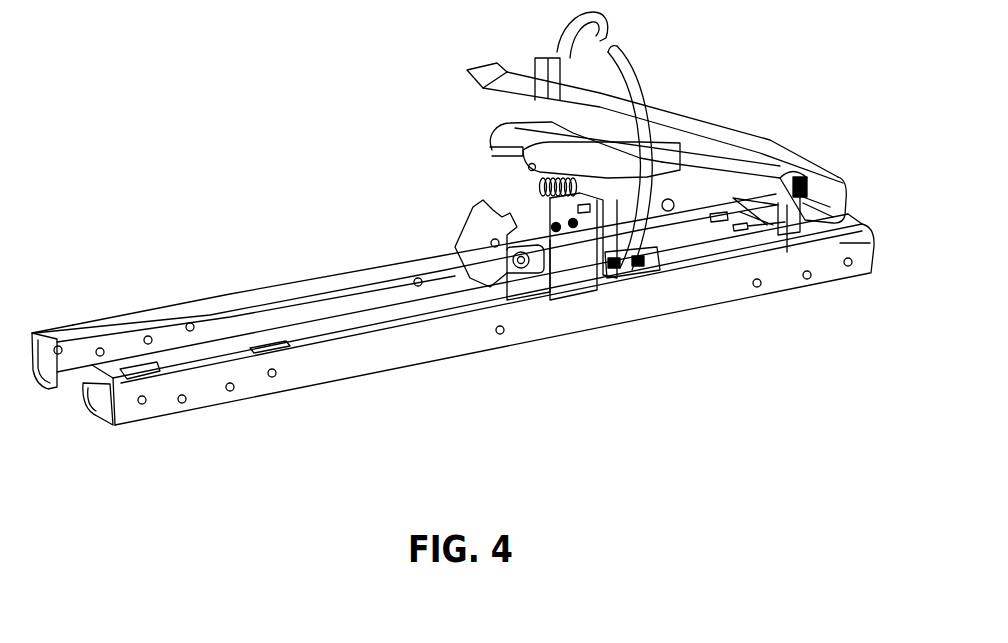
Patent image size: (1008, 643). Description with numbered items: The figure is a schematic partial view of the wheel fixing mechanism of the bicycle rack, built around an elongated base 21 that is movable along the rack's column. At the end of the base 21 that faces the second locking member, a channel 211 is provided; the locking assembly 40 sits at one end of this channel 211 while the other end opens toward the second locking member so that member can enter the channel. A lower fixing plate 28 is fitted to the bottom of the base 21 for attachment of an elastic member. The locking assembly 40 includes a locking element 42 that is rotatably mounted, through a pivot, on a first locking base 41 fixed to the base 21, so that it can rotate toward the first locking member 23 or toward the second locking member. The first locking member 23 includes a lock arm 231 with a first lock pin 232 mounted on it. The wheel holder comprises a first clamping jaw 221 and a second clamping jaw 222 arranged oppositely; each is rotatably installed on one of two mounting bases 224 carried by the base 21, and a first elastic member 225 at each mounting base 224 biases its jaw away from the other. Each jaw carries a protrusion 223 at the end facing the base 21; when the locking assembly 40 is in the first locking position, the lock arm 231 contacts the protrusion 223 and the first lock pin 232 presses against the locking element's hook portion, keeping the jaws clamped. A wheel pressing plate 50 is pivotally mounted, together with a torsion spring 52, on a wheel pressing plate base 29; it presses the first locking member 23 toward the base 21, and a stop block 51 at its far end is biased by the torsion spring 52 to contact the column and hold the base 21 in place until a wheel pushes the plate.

The base 21 is at (383, 268).
The channel 211 is at (322, 312).
The lower fixing plate 28 is at (100, 403).
The stop block 51 is at (820, 232).
The locking assembly 40 is at (487, 324).
The first locking base 41 is at (513, 277).
The locking element 42 is at (473, 273).
The first clamping jaw 221 is at (560, 42).
The second clamping jaw 222 is at (648, 97).
The protrusion 223 is at (603, 258).
The mounting base 224 is at (543, 210).
The first elastic member 225 is at (558, 230).
The first locking member 23 is at (599, 123).
The lock arm 231 is at (523, 133).
The first lock pin 232 is at (500, 146).
The wheel pressing plate 50 is at (705, 132).
The torsion spring 52 is at (743, 228).
The wheel pressing plate base 29 is at (780, 205).